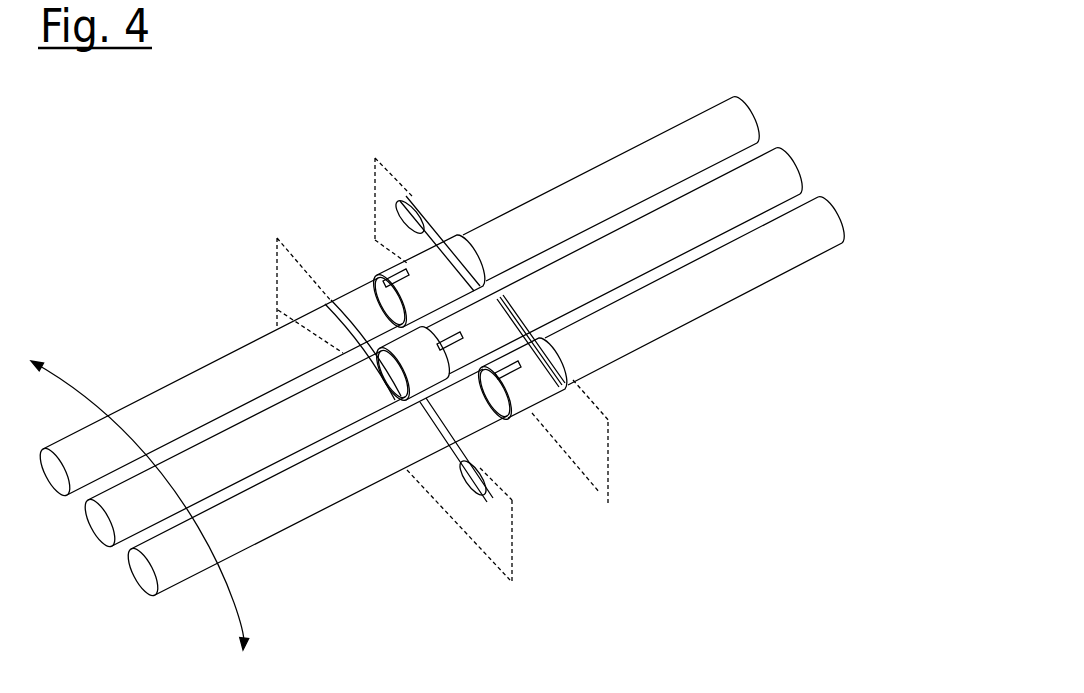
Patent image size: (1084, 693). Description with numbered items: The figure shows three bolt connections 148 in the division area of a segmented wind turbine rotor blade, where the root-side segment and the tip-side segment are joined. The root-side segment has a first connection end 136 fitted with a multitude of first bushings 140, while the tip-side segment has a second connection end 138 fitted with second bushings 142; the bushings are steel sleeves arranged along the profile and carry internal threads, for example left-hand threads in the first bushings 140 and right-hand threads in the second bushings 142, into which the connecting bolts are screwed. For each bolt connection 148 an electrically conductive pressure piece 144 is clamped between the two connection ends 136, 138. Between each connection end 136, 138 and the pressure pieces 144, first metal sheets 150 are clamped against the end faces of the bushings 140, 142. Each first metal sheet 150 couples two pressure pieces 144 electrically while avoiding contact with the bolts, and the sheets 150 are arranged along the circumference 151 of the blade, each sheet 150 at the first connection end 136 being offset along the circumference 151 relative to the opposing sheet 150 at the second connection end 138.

The first connection end 136 is at (509, 583).
The second connection end 138 is at (596, 493).
The first bushings 140 is at (262, 348).
The second bushings 142 is at (675, 171).
The pressure piece 144 is at (394, 316).
The bolt connection 148 is at (763, 100).
The first metal sheets 150 is at (410, 190).
The circumference 151 is at (233, 600).